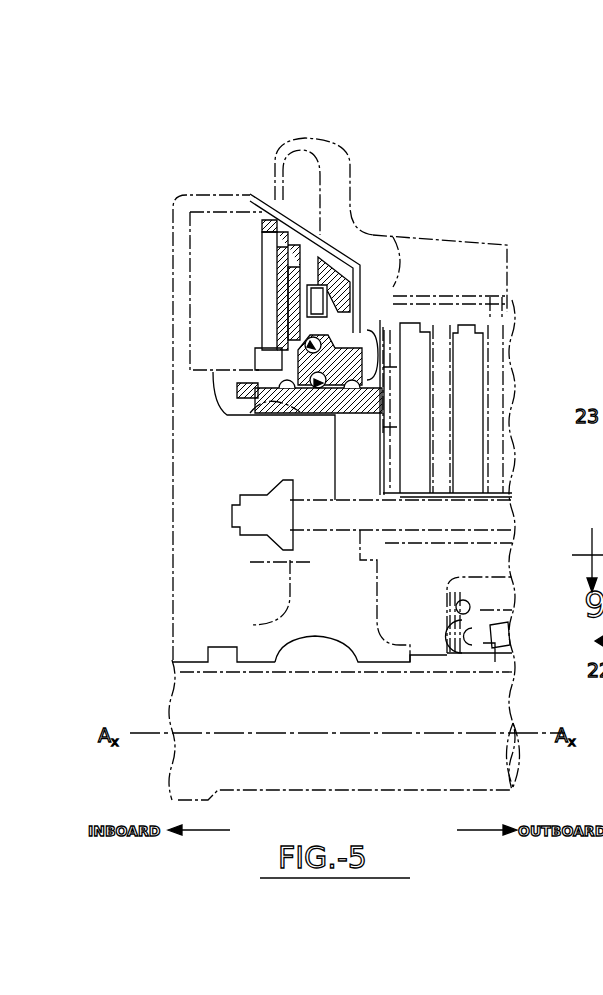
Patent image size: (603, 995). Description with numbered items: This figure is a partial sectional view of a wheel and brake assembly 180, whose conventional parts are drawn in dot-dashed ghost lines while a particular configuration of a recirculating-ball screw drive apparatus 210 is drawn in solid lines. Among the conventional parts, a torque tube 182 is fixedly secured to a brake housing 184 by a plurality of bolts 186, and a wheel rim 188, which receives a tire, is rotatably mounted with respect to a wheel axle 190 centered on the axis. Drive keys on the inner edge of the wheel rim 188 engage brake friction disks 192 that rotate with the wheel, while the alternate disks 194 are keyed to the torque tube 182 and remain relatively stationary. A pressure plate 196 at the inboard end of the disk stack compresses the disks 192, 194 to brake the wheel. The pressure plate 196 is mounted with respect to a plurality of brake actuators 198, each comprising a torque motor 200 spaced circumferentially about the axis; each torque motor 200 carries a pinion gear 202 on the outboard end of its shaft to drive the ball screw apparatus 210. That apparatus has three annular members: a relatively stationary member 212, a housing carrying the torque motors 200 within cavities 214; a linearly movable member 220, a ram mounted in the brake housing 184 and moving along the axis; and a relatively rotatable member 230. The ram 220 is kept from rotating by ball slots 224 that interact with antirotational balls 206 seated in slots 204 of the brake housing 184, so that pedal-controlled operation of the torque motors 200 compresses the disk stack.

The wheel and brake assembly 180 is at (437, 180).
The torque tube 182 is at (410, 537).
The brake housing 184 is at (300, 567).
The bolts 186 is at (230, 521).
The wheel rim 188 is at (488, 255).
The wheel axle 190 is at (203, 682).
The brake friction disks 192 is at (445, 315).
The disks 194 is at (472, 337).
The pressure plate 196 is at (418, 353).
The brake actuator 198 is at (222, 202).
The torque motor 200 is at (222, 230).
The pinion gear 202 is at (318, 306).
The slots 204 is at (317, 426).
The antirotational balls 206 is at (280, 425).
The recirculating-ball screw drive apparatus 210 is at (323, 258).
The relatively stationary member 212 is at (254, 256).
The cavities 214 is at (589, 329).
The linearly movable member 220 is at (228, 390).
The ball slots 224 is at (312, 382).
The relatively rotatable member 230 is at (290, 355).